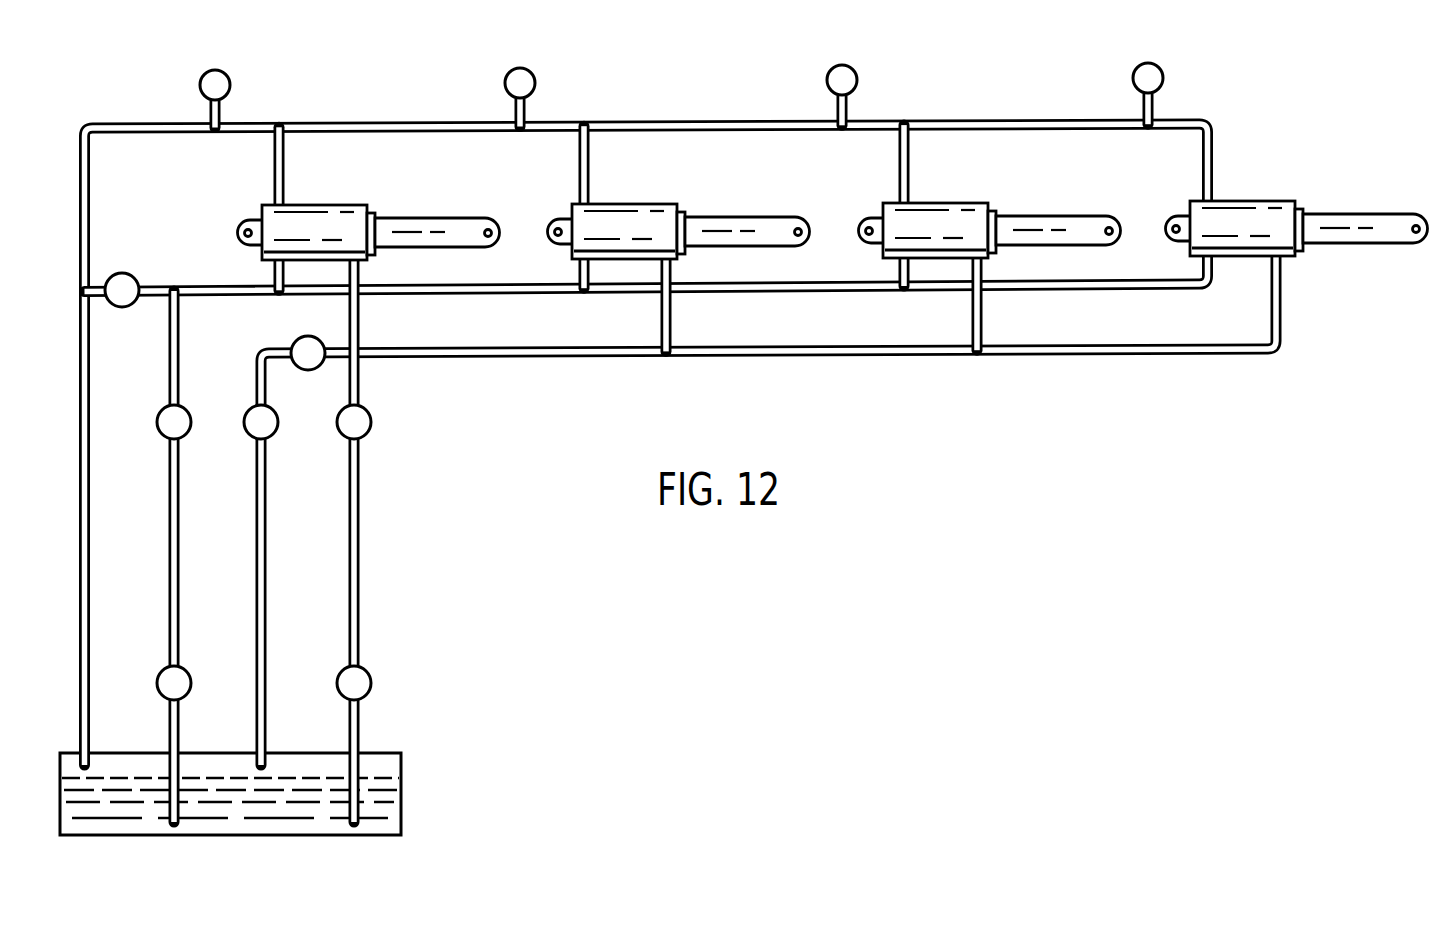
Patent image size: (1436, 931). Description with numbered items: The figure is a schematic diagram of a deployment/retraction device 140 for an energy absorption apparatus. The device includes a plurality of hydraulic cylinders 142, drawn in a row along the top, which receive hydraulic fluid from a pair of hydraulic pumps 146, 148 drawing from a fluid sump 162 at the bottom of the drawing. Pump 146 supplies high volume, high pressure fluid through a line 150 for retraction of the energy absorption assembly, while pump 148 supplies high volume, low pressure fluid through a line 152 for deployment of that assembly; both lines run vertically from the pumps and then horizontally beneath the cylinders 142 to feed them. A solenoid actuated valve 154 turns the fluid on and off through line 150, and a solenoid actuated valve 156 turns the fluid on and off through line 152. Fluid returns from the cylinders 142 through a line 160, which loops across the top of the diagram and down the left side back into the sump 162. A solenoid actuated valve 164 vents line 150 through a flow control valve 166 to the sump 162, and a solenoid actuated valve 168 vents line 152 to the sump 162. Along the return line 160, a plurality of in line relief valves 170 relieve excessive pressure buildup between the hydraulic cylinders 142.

The deployment/retraction device 140 is at (712, 86).
The hydraulic cylinders 142 is at (345, 213).
The hydraulic pump 146 is at (370, 667).
The hydraulic pump 148 is at (183, 672).
The line 150 is at (780, 357).
The line 152 is at (780, 292).
The solenoid actuated valve 154 is at (372, 421).
The solenoid actuated valve 156 is at (182, 410).
The line 160 is at (1030, 118).
The fluid sump 162 is at (405, 763).
The solenoid actuated valve 164 is at (295, 341).
The flow control valve 166 is at (273, 433).
The solenoid actuated valve 168 is at (124, 272).
The in line relief valves 170 is at (227, 73).